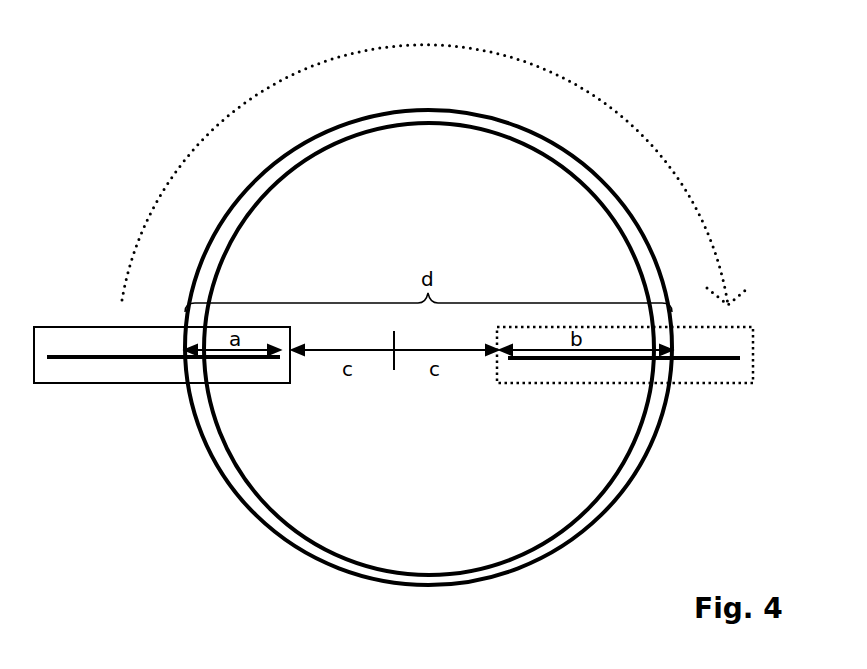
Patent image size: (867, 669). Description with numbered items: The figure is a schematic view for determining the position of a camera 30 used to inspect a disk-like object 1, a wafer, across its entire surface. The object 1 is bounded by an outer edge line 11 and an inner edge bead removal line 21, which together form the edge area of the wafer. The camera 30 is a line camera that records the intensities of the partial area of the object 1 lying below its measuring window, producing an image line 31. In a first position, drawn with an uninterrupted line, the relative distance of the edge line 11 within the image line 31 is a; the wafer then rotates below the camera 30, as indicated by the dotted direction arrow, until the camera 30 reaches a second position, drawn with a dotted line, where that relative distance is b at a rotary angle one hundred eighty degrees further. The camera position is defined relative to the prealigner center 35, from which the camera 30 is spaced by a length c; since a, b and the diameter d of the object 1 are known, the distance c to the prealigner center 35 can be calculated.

The disk-like object 1 is at (494, 195).
The edge line 11 is at (383, 111).
The edge bead removal line 21 is at (312, 153).
The camera 30 is at (68, 327).
The image line 31 is at (87, 358).
The prealigner center 35 is at (397, 383).